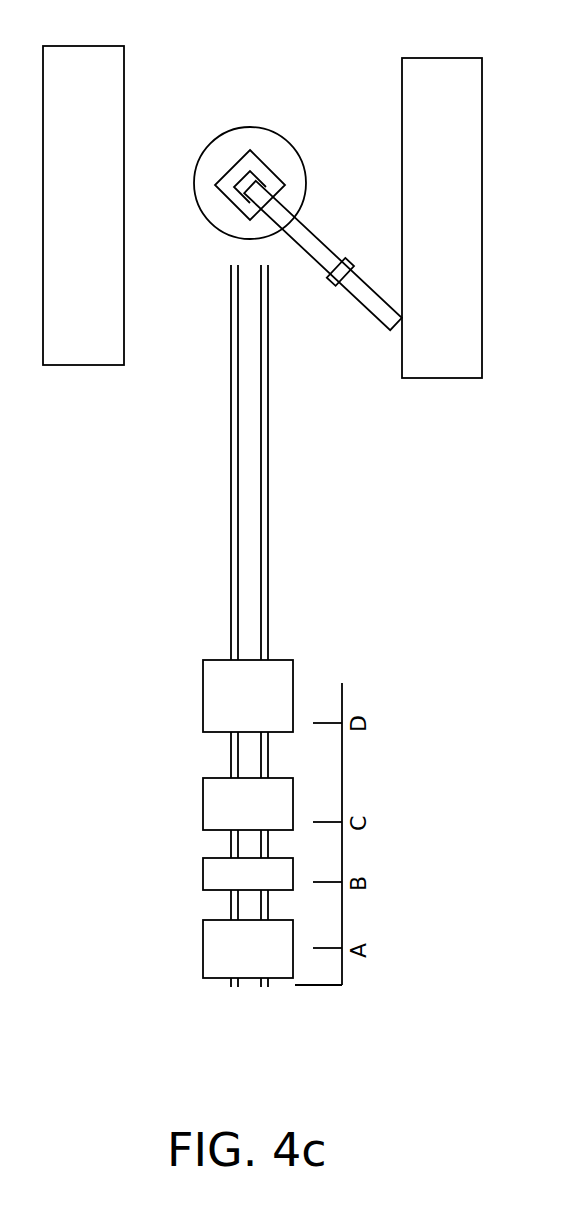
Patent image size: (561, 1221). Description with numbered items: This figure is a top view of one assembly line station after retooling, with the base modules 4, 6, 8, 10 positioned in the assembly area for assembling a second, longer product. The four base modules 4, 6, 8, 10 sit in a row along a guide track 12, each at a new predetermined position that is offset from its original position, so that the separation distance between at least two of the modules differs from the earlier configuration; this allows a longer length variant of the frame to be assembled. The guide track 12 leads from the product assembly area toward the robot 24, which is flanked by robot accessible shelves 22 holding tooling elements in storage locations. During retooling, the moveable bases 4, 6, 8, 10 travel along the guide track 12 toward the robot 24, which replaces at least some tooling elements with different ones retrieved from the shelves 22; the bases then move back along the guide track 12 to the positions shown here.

The base module 4 is at (203, 943).
The base module 6 is at (203, 875).
The base module 8 is at (203, 803).
The base module 10 is at (203, 693).
The guide track 12 is at (230, 523).
The robot accessible shelves 22 is at (73, 366).
The robot 24 is at (250, 127).